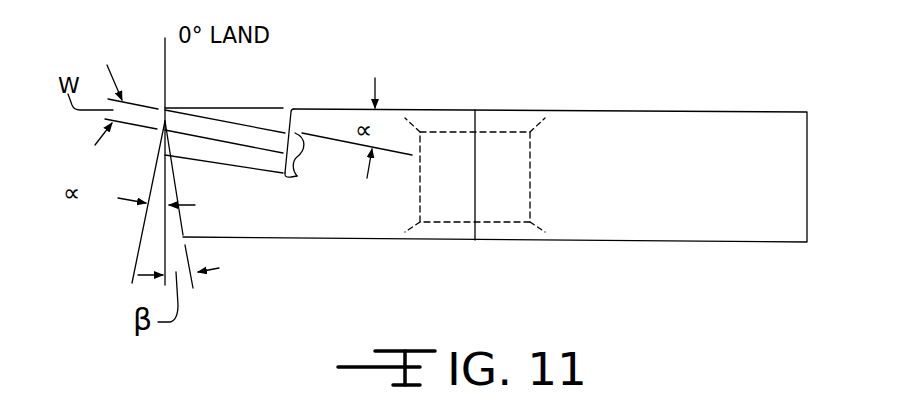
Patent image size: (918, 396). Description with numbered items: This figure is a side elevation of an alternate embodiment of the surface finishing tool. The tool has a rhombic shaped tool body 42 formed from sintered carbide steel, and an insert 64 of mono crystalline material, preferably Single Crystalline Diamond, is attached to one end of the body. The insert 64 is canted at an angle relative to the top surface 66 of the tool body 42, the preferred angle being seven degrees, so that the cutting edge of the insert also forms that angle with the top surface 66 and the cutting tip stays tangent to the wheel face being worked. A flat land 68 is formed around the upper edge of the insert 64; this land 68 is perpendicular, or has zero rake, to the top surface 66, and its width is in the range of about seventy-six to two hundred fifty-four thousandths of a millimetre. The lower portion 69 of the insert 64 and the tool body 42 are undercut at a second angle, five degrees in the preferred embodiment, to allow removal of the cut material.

The tool body 42 is at (652, 128).
The insert 64 is at (298, 158).
The top surface of the tool body 66 is at (310, 108).
The flat land 68 is at (225, 128).
The lower portion of the insert 69 is at (238, 157).